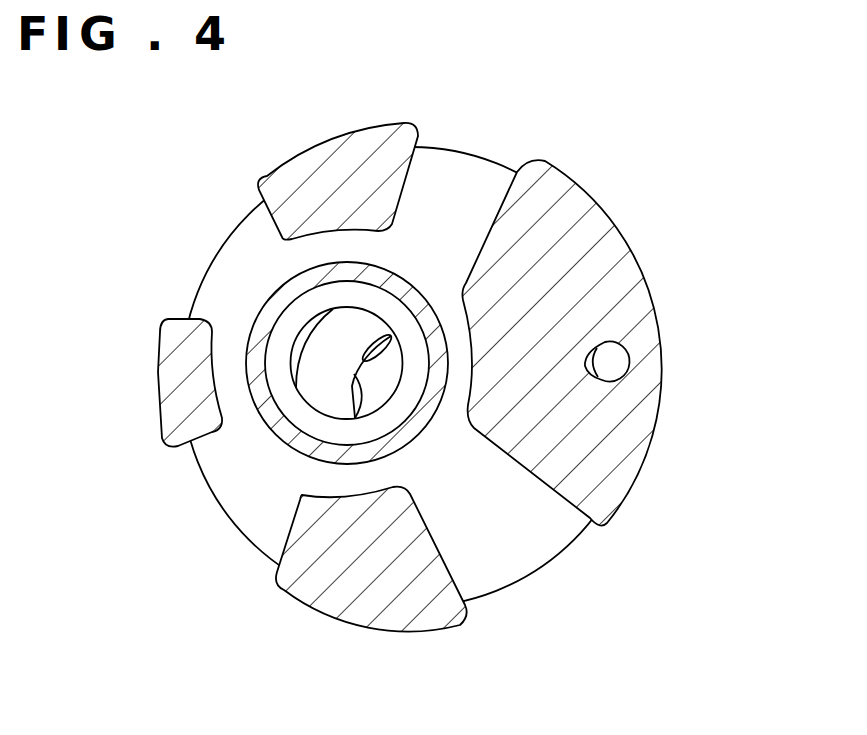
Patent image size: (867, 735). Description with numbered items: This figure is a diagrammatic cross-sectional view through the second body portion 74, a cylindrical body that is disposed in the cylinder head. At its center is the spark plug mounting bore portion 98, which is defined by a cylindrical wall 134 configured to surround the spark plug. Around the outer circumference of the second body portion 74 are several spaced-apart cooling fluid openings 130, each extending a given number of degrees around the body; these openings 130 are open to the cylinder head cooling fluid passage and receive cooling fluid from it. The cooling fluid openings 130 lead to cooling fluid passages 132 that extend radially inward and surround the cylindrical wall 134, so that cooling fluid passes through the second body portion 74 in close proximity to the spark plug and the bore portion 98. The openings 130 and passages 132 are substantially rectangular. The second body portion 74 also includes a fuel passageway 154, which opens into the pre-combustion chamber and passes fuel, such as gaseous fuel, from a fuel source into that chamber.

The second body portion 74 is at (87, 274).
The spark plug mounting bore portion 98 is at (288, 299).
The cooling fluid openings 130 is at (239, 203).
The cooling fluid passages 132 is at (372, 255).
The cylindrical wall 134 is at (393, 276).
The fuel passageway 154 is at (615, 360).